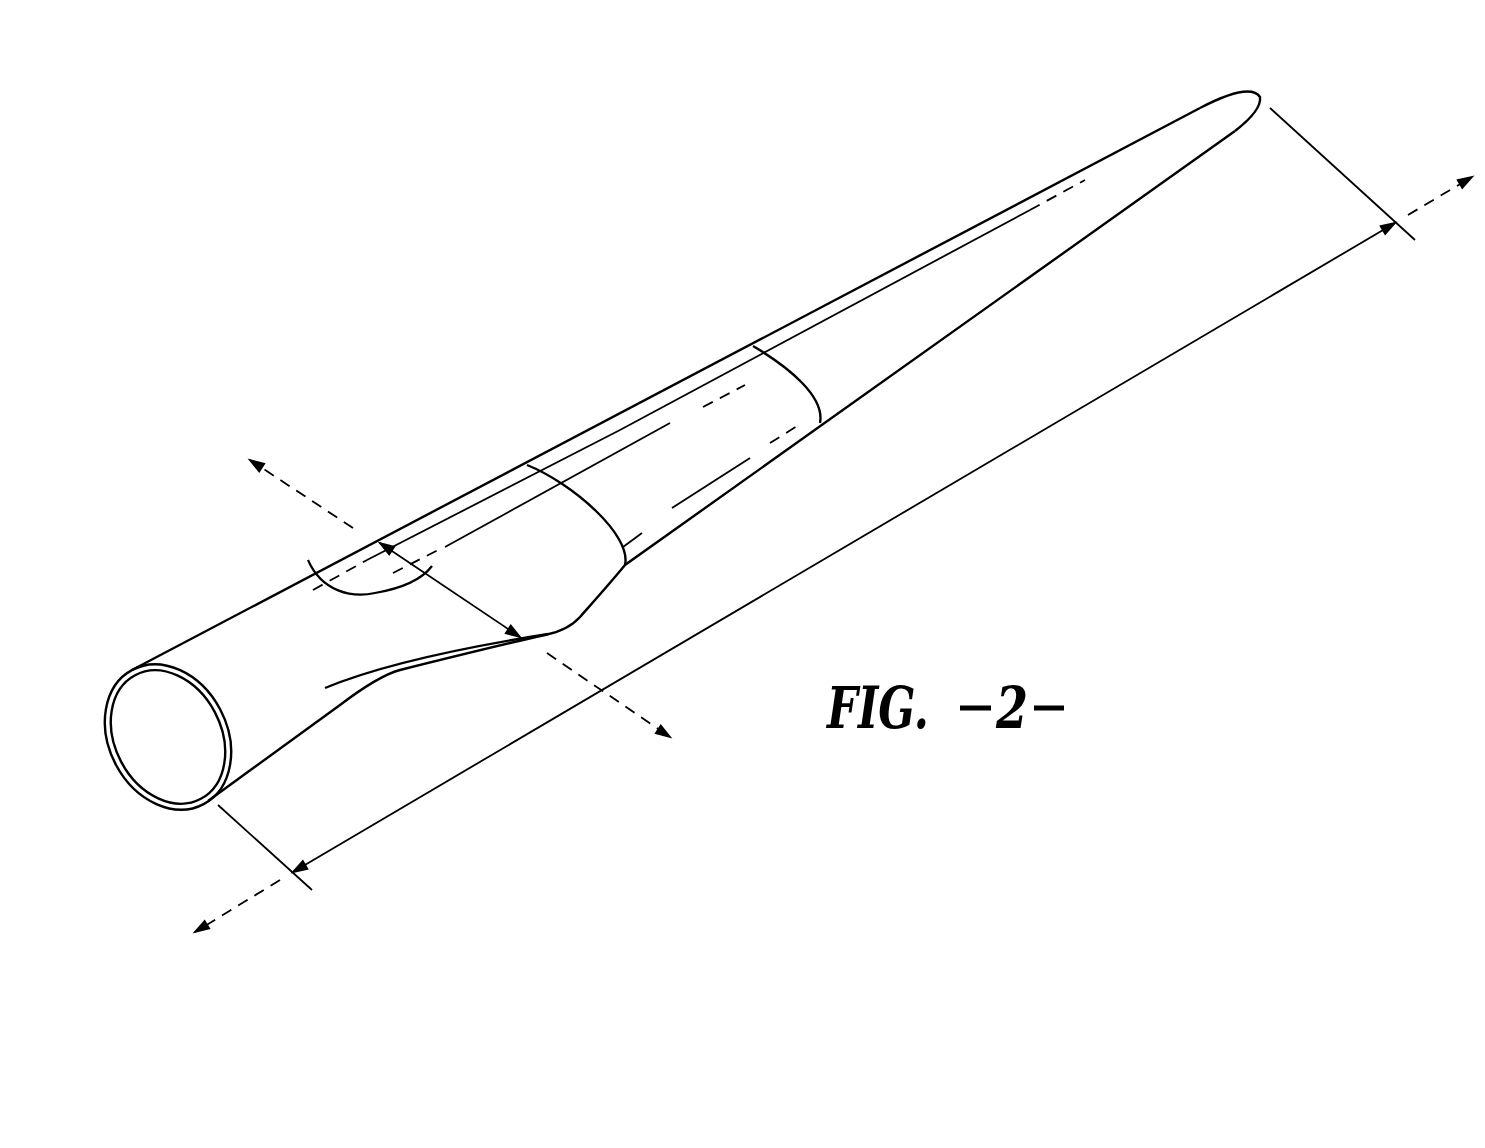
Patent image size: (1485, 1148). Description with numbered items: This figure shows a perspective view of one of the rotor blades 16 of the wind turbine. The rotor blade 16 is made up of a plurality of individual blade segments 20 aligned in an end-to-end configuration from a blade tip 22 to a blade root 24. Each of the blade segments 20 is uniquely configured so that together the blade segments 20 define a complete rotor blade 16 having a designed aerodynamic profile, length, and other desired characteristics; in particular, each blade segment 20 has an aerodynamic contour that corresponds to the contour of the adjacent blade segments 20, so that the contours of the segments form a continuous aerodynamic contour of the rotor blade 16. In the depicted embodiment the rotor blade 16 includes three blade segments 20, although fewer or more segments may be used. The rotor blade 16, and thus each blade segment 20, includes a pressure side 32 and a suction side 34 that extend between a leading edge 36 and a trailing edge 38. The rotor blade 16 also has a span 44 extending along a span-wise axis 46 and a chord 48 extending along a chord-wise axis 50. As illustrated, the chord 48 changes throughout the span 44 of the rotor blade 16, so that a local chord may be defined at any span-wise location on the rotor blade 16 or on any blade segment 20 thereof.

The rotor blade 16 is at (425, 328).
The blade segment 20 is at (945, 213).
The blade tip 22 is at (1268, 87).
The blade root 24 is at (168, 745).
The pressure side 32 is at (868, 345).
The suction side 34 is at (907, 293).
The leading edge 36 is at (473, 492).
The trailing edge 38 is at (580, 617).
The span 44 is at (880, 528).
The span-wise axis 46 is at (298, 492).
The chord 48 is at (397, 584).
The chord-wise axis 50 is at (250, 897).